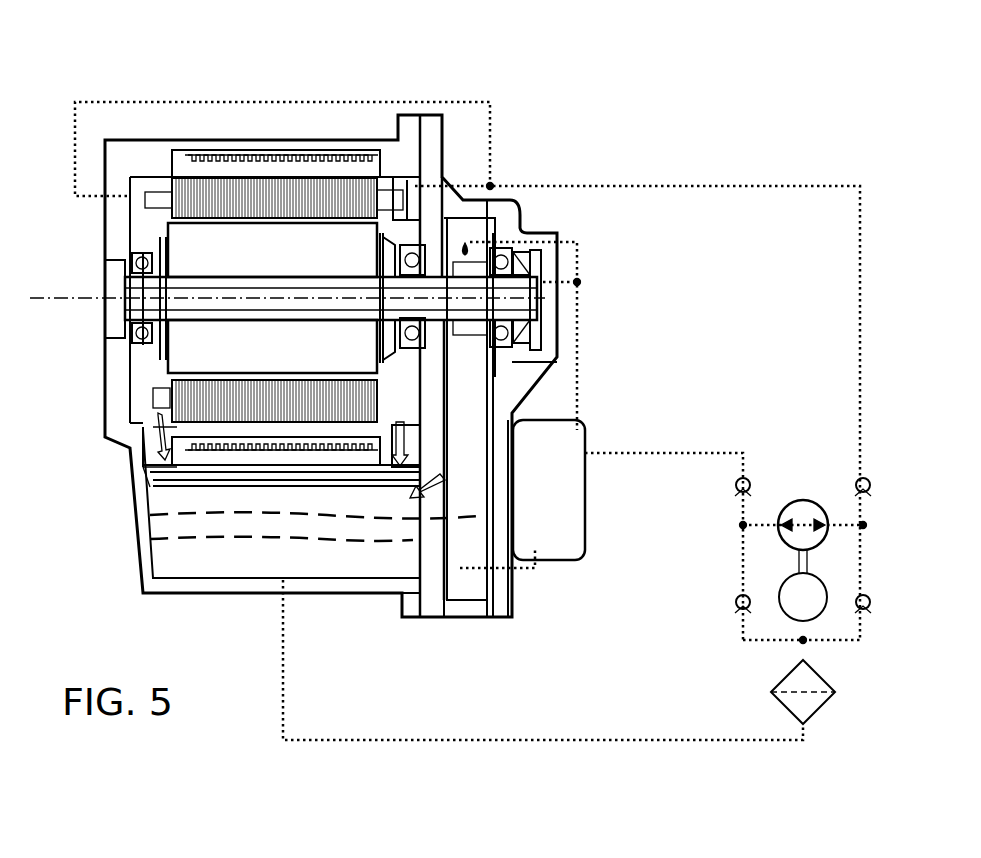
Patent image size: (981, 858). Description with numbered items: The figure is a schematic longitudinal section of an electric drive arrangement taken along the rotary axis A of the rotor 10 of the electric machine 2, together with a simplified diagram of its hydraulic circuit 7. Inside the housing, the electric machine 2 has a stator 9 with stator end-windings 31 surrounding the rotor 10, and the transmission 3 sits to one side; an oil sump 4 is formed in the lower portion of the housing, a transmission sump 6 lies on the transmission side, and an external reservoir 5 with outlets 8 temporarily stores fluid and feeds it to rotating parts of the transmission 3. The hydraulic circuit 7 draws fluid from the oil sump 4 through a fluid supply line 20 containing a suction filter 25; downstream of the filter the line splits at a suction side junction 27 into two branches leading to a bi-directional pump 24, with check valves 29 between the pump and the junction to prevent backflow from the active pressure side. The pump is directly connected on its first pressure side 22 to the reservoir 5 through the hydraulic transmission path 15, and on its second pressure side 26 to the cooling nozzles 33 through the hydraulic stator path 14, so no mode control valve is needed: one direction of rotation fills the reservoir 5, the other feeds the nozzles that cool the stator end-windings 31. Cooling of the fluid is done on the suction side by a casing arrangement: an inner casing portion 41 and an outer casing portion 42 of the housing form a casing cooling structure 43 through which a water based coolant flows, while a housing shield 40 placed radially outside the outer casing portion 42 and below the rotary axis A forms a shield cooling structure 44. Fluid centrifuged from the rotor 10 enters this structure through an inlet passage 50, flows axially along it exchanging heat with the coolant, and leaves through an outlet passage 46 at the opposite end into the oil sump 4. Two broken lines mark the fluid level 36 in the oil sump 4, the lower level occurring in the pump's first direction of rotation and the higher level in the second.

The electric machine 2 is at (107, 410).
The transmission 3 is at (482, 483).
The oil sump 4 is at (252, 593).
The reservoir 5 is at (560, 518).
The transmission sump 6 is at (467, 593).
The hydraulic circuit 7 is at (777, 153).
The outlets 8 is at (573, 347).
The stator 9 is at (193, 197).
The rotor 10 is at (316, 267).
The hydraulic stator path 14 is at (790, 190).
The hydraulic transmission path 15 is at (693, 450).
The fluid supply line 20 is at (600, 740).
The first pressure side 22 is at (765, 528).
The bi-directional pump 24 is at (805, 507).
The suction filter 25 is at (817, 702).
The second pressure side 26 is at (853, 537).
The suction side junction 27 is at (807, 640).
The check valves 29 is at (738, 487).
The stator end-windings 31 is at (388, 200).
The cooling nozzles 33 is at (423, 181).
The fluid level 36 is at (207, 531).
The housing shield 40 is at (317, 487).
The inner casing portion 41 is at (230, 175).
The outer casing portion 42 is at (363, 140).
The casing cooling structure 43 is at (297, 150).
The shield cooling structure 44 is at (362, 468).
The outlet passage 46 is at (160, 477).
The inlet passage 50 is at (150, 447).
The rotary axis A is at (55, 302).